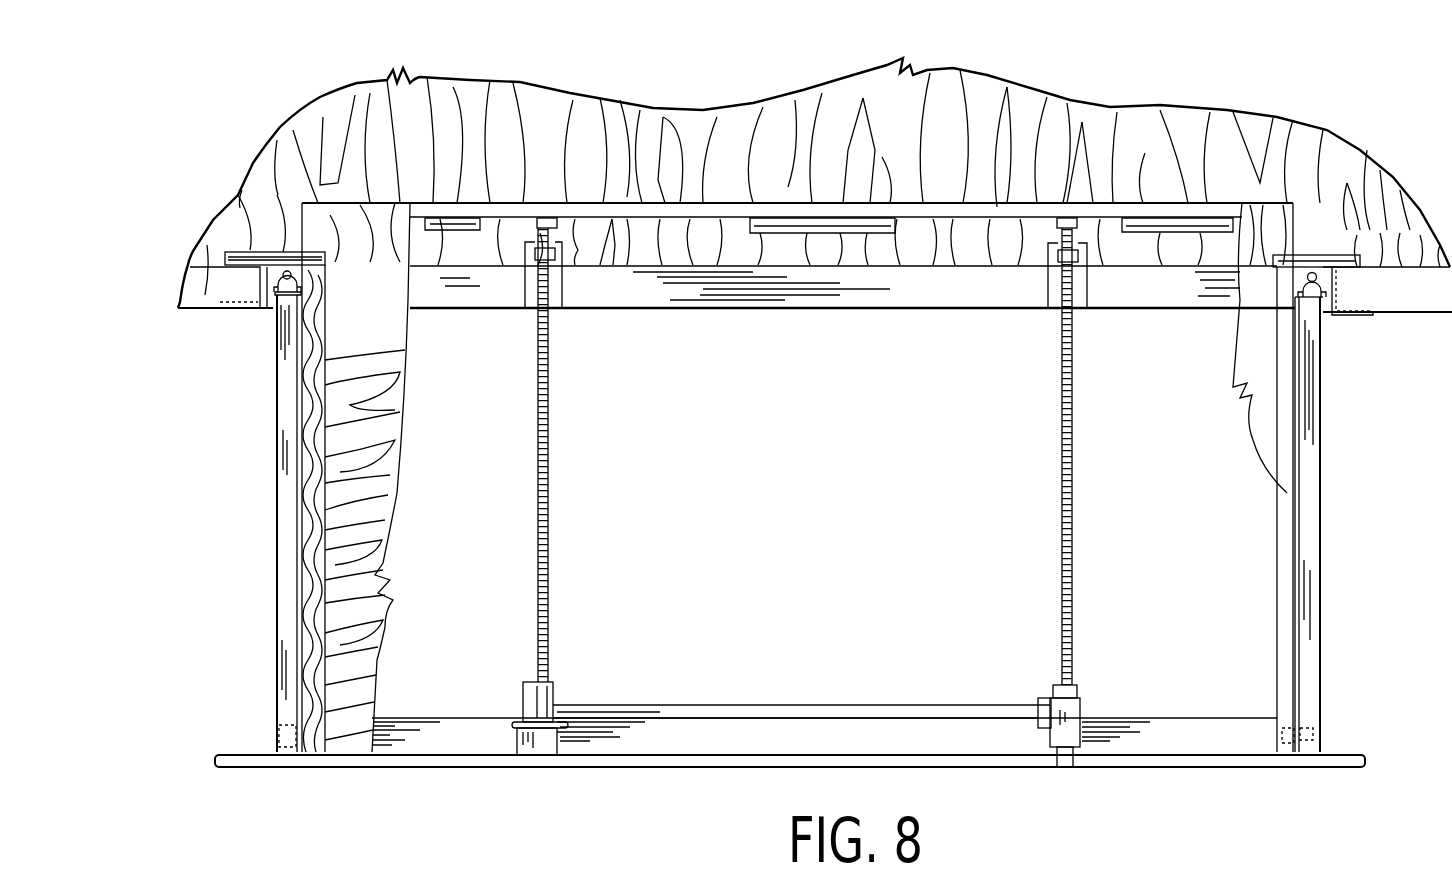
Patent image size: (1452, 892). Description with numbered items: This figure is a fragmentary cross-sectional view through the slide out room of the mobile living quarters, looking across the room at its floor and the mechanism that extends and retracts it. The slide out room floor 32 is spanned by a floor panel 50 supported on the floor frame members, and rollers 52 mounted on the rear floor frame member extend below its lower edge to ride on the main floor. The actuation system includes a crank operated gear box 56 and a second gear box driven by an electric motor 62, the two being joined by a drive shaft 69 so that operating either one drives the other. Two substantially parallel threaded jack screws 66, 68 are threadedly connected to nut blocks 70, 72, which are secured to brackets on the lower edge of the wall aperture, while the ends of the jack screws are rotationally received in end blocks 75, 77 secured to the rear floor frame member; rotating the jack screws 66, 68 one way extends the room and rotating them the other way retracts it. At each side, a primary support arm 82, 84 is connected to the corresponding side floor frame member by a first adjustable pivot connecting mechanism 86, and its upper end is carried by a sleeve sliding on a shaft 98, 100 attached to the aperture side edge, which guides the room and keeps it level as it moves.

The slide out room floor 32 is at (412, 768).
The floor panel 50 is at (388, 368).
The rollers 52 is at (851, 233).
The crank operated gear box 56 is at (1067, 722).
The electric motor 62 is at (543, 700).
The threaded jack screw 66 is at (1076, 490).
The threaded jack screw 68 is at (549, 480).
The drive shaft 69 is at (815, 705).
The nut block 70 is at (1067, 258).
The nut block 72 is at (550, 257).
The end block 75 is at (537, 222).
The end block 77 is at (1072, 223).
The primary support arm 82 is at (1322, 512).
The primary support arm 84 is at (292, 437).
The first adjustable pivot connecting mechanism 86 is at (1330, 737).
The shaft 98 is at (1316, 280).
The shaft 100 is at (283, 277).